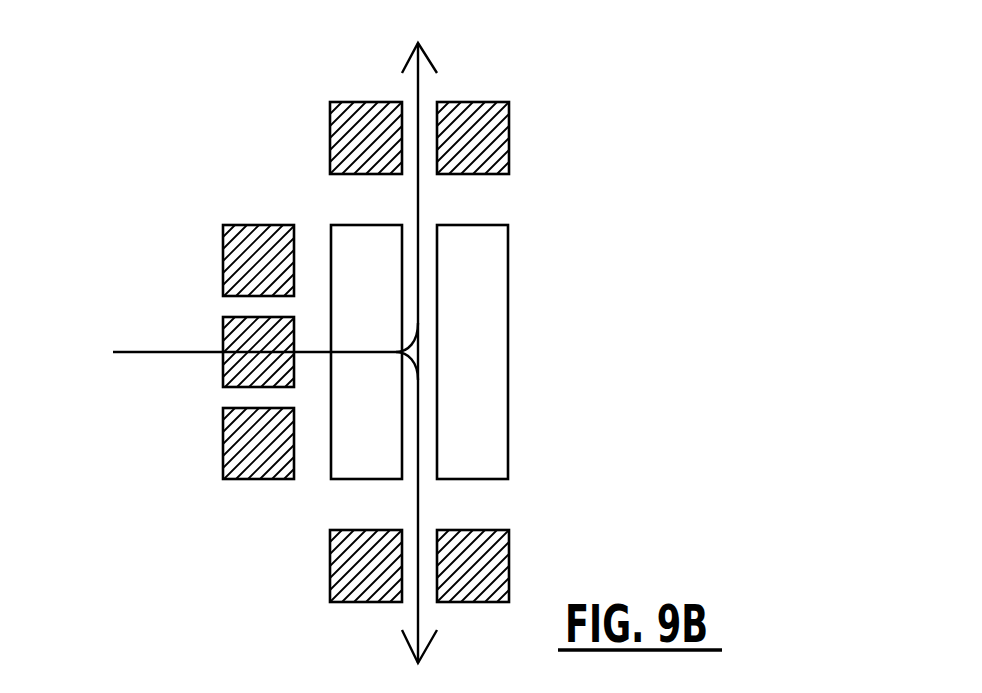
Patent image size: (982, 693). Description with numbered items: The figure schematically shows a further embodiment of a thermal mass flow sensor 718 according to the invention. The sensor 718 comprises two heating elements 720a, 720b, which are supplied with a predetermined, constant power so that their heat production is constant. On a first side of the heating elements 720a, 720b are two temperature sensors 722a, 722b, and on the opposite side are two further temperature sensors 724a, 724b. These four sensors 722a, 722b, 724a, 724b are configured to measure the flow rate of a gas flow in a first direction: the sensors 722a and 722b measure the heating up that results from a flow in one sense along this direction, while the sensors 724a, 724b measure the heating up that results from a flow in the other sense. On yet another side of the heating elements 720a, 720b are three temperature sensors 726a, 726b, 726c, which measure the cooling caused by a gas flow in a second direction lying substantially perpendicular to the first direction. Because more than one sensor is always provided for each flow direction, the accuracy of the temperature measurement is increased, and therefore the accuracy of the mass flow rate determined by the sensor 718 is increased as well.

The sensor 718 is at (672, 313).
The heating element 720a is at (343, 243).
The heating element 720b is at (487, 363).
The temperature sensor 722a is at (357, 135).
The temperature sensor 722b is at (497, 138).
The temperature sensor 724a is at (343, 587).
The temperature sensor 724b is at (480, 560).
The temperature sensor 726a is at (246, 243).
The temperature sensor 726b is at (233, 337).
The temperature sensor 726c is at (235, 433).